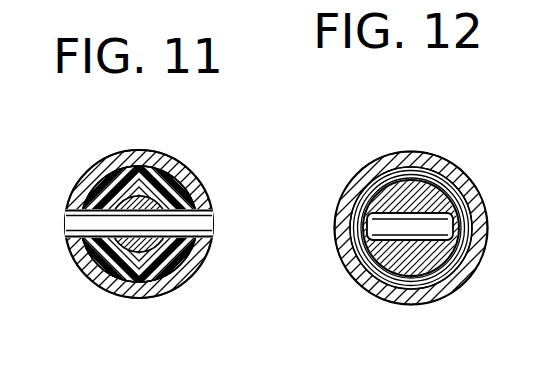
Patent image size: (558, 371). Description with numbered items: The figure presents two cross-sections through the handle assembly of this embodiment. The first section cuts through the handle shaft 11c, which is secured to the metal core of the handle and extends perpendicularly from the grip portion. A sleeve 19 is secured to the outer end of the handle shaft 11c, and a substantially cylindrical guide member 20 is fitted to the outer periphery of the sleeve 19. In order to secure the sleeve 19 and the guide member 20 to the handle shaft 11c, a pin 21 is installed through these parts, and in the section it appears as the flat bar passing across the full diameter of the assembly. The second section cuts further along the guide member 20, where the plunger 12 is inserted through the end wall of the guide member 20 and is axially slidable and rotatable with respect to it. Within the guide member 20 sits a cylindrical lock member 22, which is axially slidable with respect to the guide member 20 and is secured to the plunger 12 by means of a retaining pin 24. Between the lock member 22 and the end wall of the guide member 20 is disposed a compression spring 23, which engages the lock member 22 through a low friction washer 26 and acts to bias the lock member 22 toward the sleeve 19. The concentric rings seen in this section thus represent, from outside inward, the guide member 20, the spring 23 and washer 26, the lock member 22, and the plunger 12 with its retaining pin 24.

In FIG. 11, the guide member 20 is at (182, 173).
In FIG. 12, the guide member 20 is at (433, 161).
In FIG. 11, the sleeve 19 is at (180, 202).
In FIG. 11, the pin 21 is at (193, 228).
In FIG. 11, the handle shaft 11c is at (150, 243).
In FIG. 12, the plunger 12 is at (397, 202).
In FIG. 12, the lock member 22 is at (425, 163).
In FIG. 12, the compression spring 23 is at (440, 182).
In FIG. 12, the retaining pin 24 is at (462, 197).
In FIG. 12, the low friction washer 26 is at (459, 197).